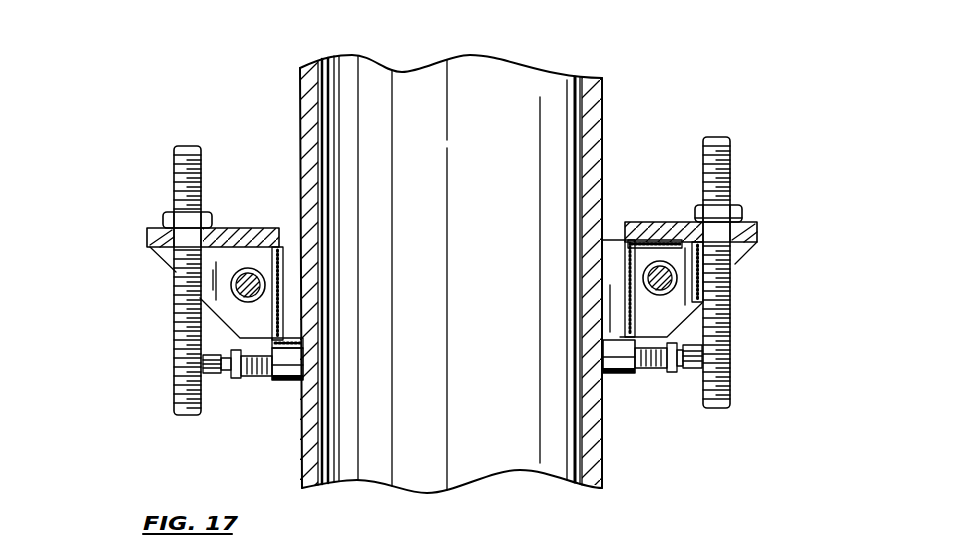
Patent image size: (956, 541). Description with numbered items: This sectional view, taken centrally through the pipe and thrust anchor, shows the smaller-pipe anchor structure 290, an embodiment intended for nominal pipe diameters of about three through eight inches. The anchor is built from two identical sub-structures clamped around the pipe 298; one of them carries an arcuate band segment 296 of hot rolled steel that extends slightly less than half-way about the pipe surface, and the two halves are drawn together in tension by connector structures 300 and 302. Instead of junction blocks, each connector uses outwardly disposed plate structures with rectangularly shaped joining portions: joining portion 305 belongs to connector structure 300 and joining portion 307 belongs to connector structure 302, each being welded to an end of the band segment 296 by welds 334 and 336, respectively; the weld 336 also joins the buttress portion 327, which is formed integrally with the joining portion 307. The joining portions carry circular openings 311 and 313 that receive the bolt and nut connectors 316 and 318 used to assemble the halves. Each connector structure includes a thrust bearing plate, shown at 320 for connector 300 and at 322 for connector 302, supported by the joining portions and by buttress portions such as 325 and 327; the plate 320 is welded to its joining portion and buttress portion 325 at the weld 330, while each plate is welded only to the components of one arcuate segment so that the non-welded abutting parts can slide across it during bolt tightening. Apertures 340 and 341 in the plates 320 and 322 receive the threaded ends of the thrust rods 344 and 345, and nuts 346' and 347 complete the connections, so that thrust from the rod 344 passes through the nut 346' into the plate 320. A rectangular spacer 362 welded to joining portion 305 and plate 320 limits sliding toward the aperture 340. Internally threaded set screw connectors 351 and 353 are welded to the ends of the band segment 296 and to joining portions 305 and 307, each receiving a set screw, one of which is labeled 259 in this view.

The anchor structure 290 is at (745, 22).
The arcuate band segment 296 is at (617, 337).
The pipe 298 is at (409, 474).
The connector structure 300 is at (748, 288).
The connector structure 302 is at (146, 285).
The rectangularly shaped joining portion 305 is at (652, 320).
The rectangularly shaped joining portion 307 is at (205, 312).
The circular opening 311 is at (652, 222).
The circular opening 313 is at (247, 266).
The bolt and nut connector 316 is at (662, 297).
The bolt and nut connector 318 is at (244, 300).
The thrust bearing plate 320 is at (758, 229).
The thrust bearing plate 322 is at (148, 240).
The buttress portion 325 is at (743, 254).
The buttress portion 327 is at (172, 252).
The weld 330 is at (750, 244).
The weld 334 is at (635, 222).
The weld 336 is at (278, 248).
The aperture 340 is at (750, 218).
The aperture 341 is at (160, 226).
The thrust rod 344 is at (732, 138).
The thrust rod 345 is at (180, 146).
The nut 346' is at (753, 193).
The nut 347 is at (165, 215).
The set screw connector 351 is at (625, 374).
The set screw connector 353 is at (281, 383).
The rectangular spacer 362 is at (692, 222).
The bolt 259 is at (214, 376).